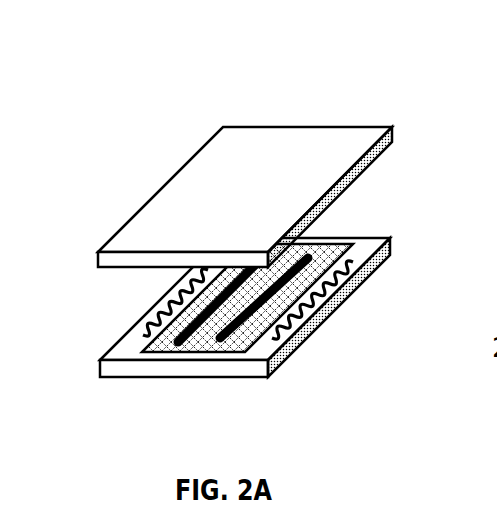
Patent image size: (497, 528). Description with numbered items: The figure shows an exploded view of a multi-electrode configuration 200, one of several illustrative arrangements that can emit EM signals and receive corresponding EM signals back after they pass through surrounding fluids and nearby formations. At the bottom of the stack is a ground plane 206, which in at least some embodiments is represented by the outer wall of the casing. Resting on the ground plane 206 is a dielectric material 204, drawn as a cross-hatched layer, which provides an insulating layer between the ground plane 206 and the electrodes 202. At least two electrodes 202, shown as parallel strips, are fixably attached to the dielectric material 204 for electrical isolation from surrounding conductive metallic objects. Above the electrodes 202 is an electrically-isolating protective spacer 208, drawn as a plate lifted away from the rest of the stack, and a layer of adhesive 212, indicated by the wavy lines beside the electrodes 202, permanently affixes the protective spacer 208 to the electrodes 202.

The multi-electrode configuration 200 is at (246, 233).
The electrodes 202 is at (220, 340).
The dielectric material 204 is at (337, 243).
The ground plane 206 is at (310, 348).
The protective spacer 208 is at (225, 157).
The layer of adhesive 212 is at (142, 325).